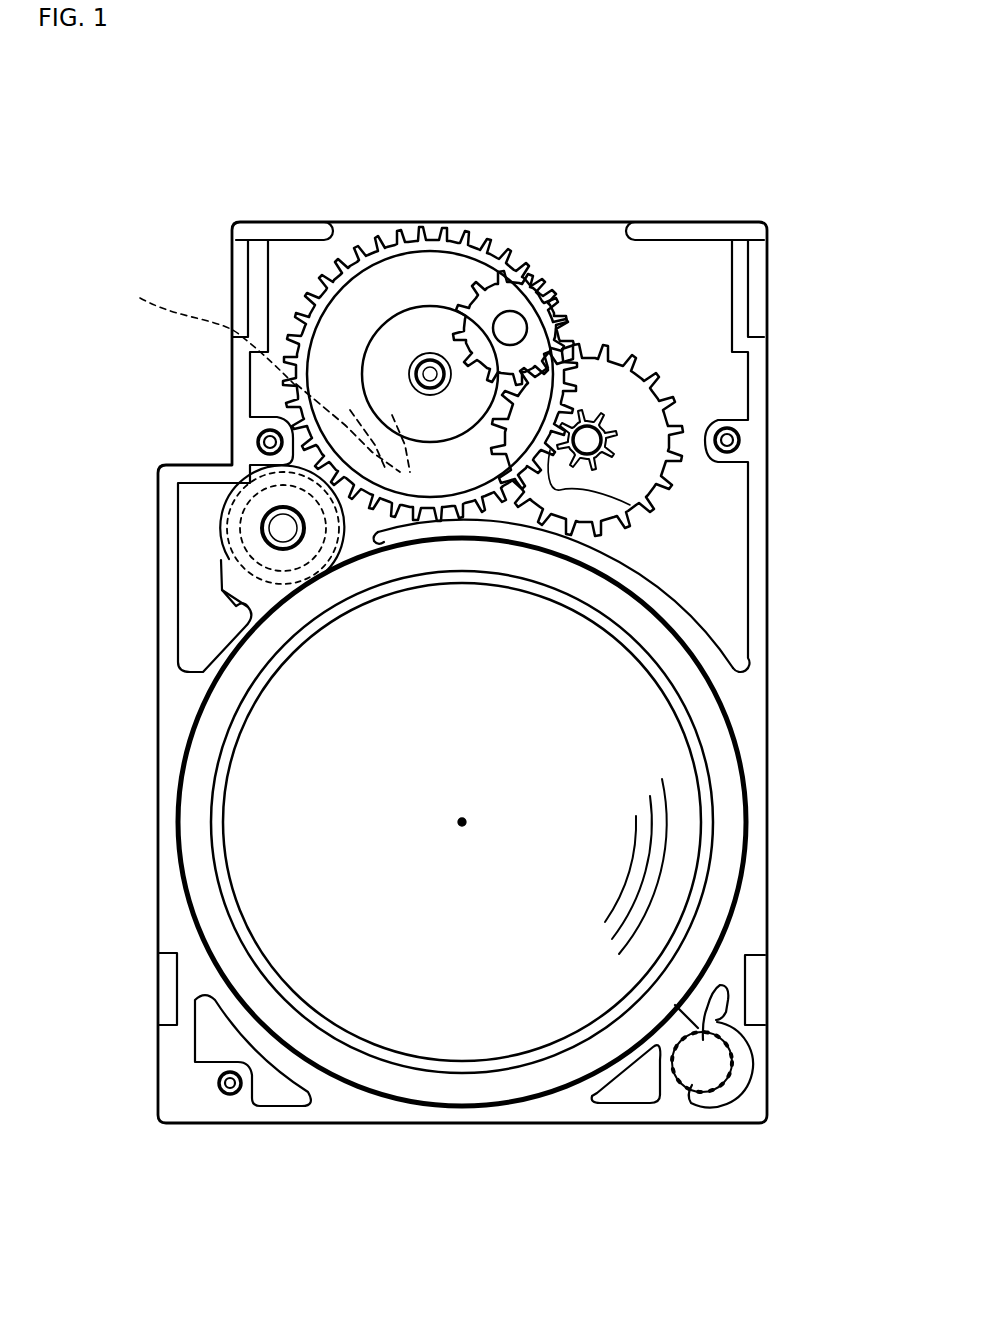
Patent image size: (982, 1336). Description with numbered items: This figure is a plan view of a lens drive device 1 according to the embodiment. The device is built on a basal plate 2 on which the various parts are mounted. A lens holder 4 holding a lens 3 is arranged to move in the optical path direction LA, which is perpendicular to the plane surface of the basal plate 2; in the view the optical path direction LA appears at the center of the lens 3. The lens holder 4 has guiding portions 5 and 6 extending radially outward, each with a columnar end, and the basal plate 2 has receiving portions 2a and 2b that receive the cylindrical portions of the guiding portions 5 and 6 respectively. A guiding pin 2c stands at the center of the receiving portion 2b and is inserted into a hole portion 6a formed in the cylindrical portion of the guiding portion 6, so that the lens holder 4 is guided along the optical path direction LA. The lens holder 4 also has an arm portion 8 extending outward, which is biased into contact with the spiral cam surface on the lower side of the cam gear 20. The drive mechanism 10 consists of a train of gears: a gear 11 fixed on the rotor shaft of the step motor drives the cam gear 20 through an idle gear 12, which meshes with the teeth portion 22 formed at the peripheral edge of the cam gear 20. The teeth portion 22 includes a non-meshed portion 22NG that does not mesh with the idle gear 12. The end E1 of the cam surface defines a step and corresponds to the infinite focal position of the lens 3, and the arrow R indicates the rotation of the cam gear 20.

The lens drive device 1 is at (171, 206).
The basal plate 2 is at (752, 680).
The receiving portion 2a is at (710, 1100).
The receiving portion 2b is at (218, 585).
The guiding pin 2c is at (262, 516).
The lens 3 is at (482, 1020).
The lens holder 4 is at (730, 832).
The guiding portion 5 is at (697, 1042).
The guiding portion 6 is at (232, 532).
The hole portion 6a is at (272, 526).
The arm portion 8 is at (335, 412).
The drive mechanism 10 is at (594, 256).
The gear 11 is at (444, 300).
The idle gear 12 is at (636, 398).
The cam gear 20 is at (407, 265).
The teeth portion 22 is at (503, 310).
The non-meshed portion 22NG is at (630, 505).
The end of cam surface E1 is at (200, 331).
The rotation direction R is at (482, 262).
The optical path direction LA is at (462, 822).